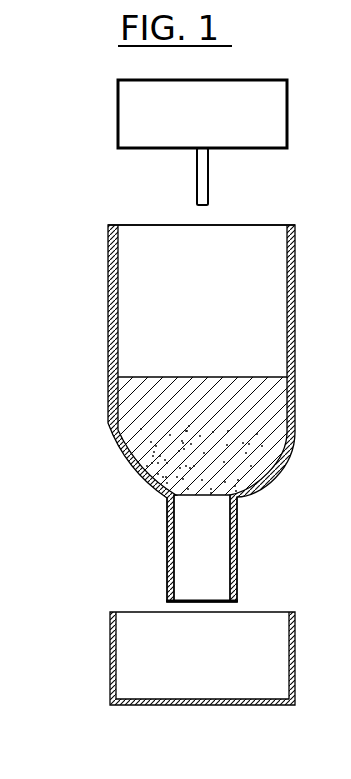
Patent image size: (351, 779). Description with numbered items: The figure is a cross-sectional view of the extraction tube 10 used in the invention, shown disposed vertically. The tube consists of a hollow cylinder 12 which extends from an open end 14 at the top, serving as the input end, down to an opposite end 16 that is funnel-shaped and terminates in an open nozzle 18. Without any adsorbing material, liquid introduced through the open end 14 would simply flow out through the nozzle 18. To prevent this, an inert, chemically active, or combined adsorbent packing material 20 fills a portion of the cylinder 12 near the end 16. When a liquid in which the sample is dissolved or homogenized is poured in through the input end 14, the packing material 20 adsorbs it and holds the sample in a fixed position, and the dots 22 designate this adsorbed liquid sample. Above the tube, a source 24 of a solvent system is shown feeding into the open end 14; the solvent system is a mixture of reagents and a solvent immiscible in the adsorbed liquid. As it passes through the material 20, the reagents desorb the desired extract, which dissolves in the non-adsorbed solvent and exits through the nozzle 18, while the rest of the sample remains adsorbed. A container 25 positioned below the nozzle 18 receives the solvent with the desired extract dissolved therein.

The extraction tube 10 is at (175, 408).
The hollow cylinder 12 is at (110, 306).
The open end 14 is at (137, 225).
The opposite end 16 is at (166, 498).
The open nozzle 18 is at (196, 605).
The adsorbent packing material 20 is at (130, 377).
The adsorbed liquid sample 22 is at (146, 450).
The solvent system source 24 is at (118, 121).
The container 25 is at (110, 650).